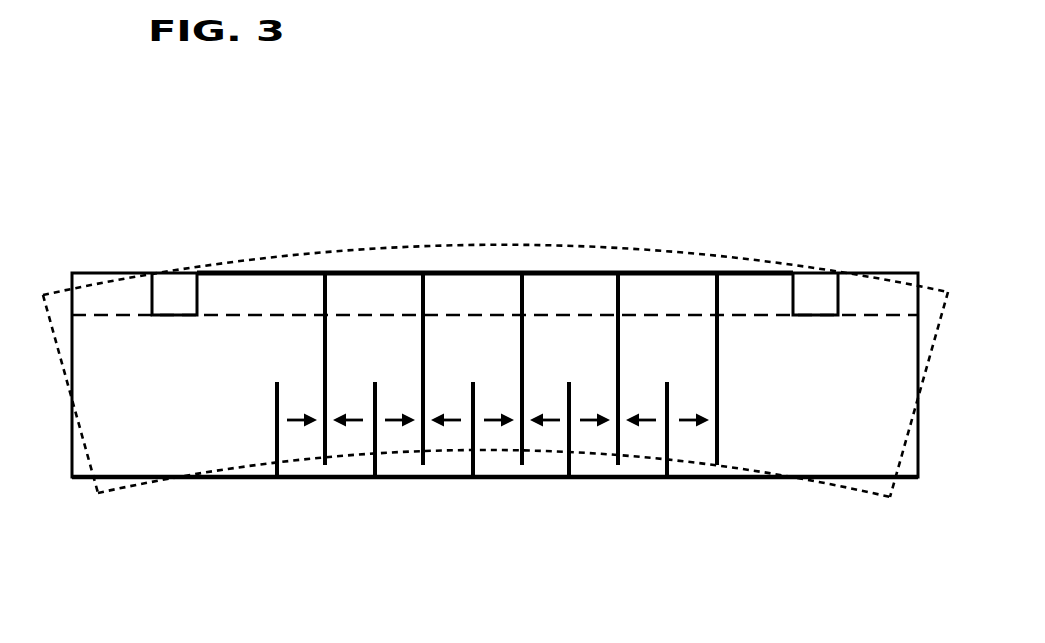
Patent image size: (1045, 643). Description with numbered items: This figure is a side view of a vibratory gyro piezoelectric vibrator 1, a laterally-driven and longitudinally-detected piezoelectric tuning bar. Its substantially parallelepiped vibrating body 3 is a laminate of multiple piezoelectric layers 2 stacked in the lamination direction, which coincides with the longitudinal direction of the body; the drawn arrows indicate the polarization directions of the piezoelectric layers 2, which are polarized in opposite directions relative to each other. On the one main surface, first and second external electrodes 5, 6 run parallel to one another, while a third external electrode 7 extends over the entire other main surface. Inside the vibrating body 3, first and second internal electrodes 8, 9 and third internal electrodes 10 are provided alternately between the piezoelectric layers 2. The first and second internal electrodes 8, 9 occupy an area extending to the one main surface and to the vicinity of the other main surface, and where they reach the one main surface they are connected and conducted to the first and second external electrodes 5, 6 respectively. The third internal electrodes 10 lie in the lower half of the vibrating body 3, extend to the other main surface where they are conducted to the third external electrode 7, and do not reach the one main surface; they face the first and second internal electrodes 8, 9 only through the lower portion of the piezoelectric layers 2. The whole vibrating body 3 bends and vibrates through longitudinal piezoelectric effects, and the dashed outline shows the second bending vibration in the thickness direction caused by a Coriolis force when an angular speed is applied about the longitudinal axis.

The vibratory gyro piezoelectric vibrator 1 is at (192, 249).
The piezoelectric layers 2 is at (437, 462).
The vibrating body 3 is at (230, 445).
The first external electrode 5 is at (495, 294).
The second external electrode 6 is at (305, 273).
The third external electrode 7 is at (325, 478).
The first internal electrode 8 is at (667, 369).
The second internal electrode 9 is at (524, 300).
The third internal electrode 10 is at (476, 424).